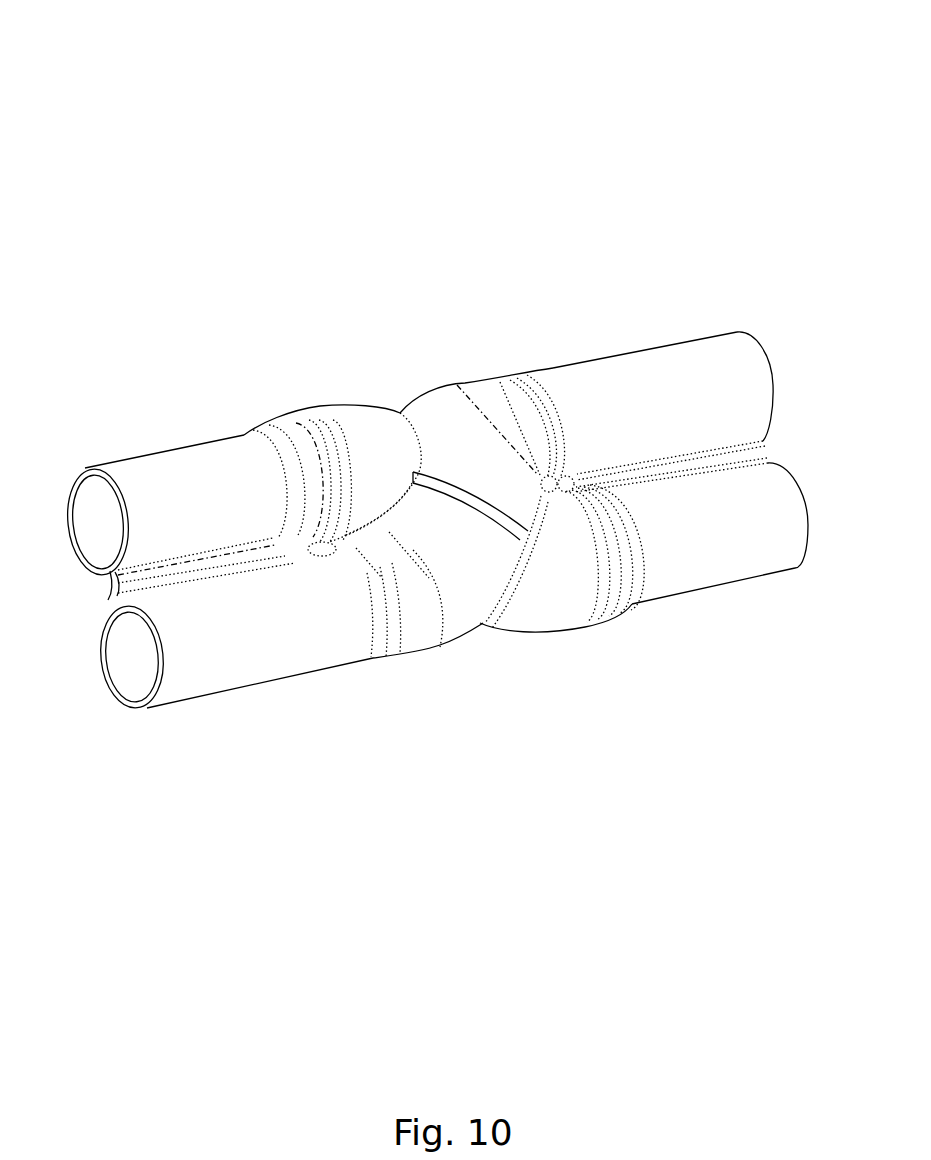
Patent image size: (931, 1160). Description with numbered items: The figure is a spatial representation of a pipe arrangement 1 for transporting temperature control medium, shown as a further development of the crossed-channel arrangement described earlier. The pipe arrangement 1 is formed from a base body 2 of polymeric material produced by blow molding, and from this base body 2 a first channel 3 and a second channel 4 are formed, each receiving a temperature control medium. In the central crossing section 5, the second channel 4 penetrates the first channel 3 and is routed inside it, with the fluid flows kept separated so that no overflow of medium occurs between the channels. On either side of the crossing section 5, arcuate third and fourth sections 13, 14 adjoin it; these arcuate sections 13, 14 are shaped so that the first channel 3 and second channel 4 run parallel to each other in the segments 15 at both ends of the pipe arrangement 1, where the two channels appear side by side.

The pipe arrangement 1 is at (330, 170).
The base body 2 is at (318, 608).
The first channel 3 is at (205, 490).
The second channel 4 is at (207, 648).
The crossing section 5 is at (408, 330).
The third section 13 is at (335, 392).
The fourth section 14 is at (539, 605).
The segments 15 is at (118, 428).